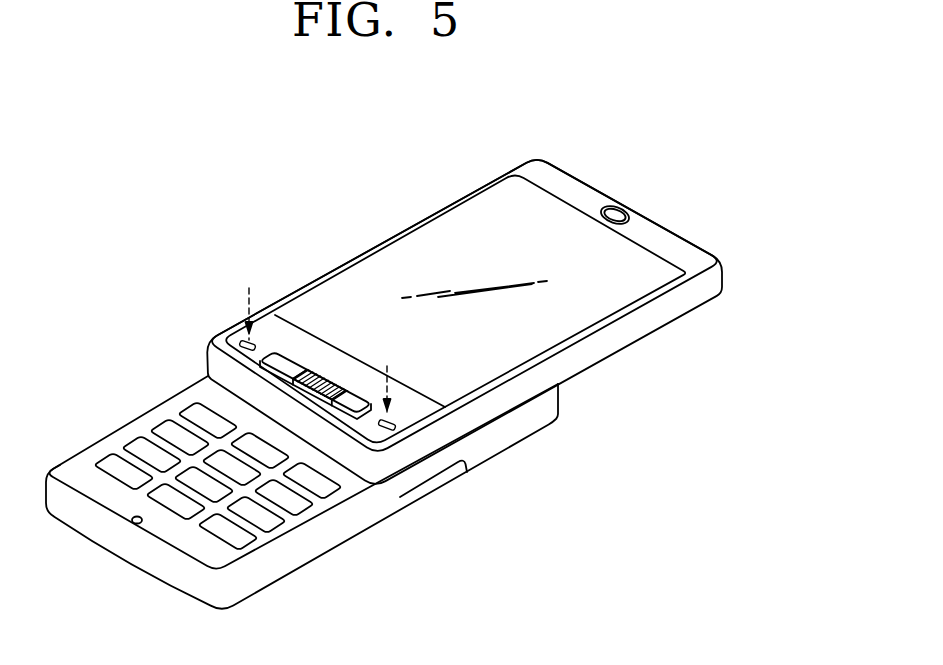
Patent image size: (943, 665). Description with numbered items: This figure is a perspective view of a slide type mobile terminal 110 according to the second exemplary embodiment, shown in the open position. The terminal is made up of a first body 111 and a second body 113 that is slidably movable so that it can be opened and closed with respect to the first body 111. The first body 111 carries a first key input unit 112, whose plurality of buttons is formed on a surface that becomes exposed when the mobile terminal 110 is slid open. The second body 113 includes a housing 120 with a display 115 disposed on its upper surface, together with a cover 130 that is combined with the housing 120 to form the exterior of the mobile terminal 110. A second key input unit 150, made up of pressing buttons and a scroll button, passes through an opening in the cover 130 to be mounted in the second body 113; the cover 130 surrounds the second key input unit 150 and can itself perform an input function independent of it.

The mobile terminal 110 is at (630, 165).
The first body 111 is at (522, 453).
The first key input unit 112 is at (163, 428).
The second body 113 is at (636, 347).
The display 115 is at (423, 245).
The housing 120 is at (470, 194).
The cover 130 is at (279, 348).
The second key input unit 150 is at (316, 399).